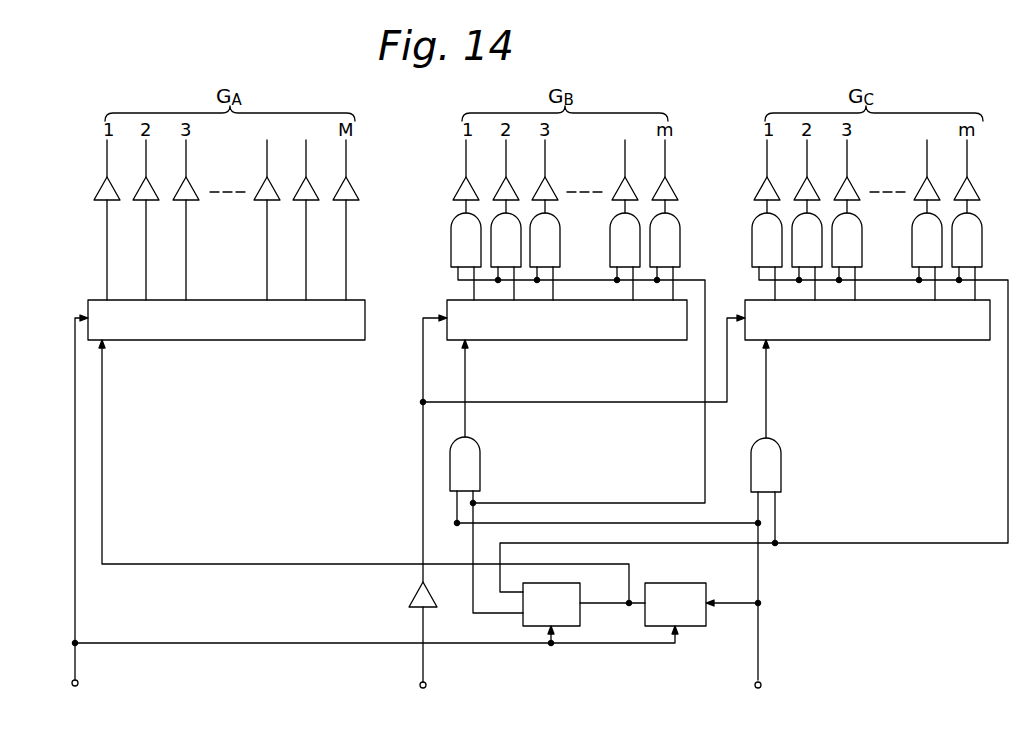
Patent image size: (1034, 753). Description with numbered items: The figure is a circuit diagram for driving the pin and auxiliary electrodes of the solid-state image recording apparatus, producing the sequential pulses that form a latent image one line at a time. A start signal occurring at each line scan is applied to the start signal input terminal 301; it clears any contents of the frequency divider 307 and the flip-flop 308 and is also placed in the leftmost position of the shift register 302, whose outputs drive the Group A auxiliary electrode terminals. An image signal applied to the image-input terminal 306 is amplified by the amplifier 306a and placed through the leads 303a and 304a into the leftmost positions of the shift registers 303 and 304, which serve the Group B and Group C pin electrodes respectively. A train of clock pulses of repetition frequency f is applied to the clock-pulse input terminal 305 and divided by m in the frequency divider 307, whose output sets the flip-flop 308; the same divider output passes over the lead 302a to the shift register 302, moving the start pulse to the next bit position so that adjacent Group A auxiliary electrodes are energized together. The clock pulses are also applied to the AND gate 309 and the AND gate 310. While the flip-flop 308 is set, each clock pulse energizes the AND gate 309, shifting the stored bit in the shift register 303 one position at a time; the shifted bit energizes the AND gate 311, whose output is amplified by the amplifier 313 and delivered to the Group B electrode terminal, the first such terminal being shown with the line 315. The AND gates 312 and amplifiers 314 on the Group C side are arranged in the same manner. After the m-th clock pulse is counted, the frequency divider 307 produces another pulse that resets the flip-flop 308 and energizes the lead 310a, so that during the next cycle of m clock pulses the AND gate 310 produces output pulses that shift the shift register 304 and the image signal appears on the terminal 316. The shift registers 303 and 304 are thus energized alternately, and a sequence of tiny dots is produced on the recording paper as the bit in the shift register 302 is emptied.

The start signal input terminal 301 is at (78, 682).
The shift register 302 is at (226, 343).
The lead 302a is at (210, 564).
The shift register 303 is at (561, 343).
The lead 303a is at (421, 371).
The shift register 304 is at (873, 343).
The lead 304a is at (591, 404).
The clock-pulse input terminal 305 is at (760, 682).
The image-input terminal 306 is at (426, 683).
The amplifier 306a is at (407, 596).
The frequency divider 307 is at (708, 587).
The flip-flop 308 is at (573, 628).
The AND gate 309 is at (481, 468).
The AND gate 310 is at (783, 468).
The lead 310a is at (631, 545).
The AND gate 311 is at (448, 244).
The AND gates 312 is at (752, 244).
The amplifier 313 is at (452, 196).
The amplifiers 314 is at (754, 196).
The output lines 315 is at (466, 158).
The terminal 316 is at (766, 162).